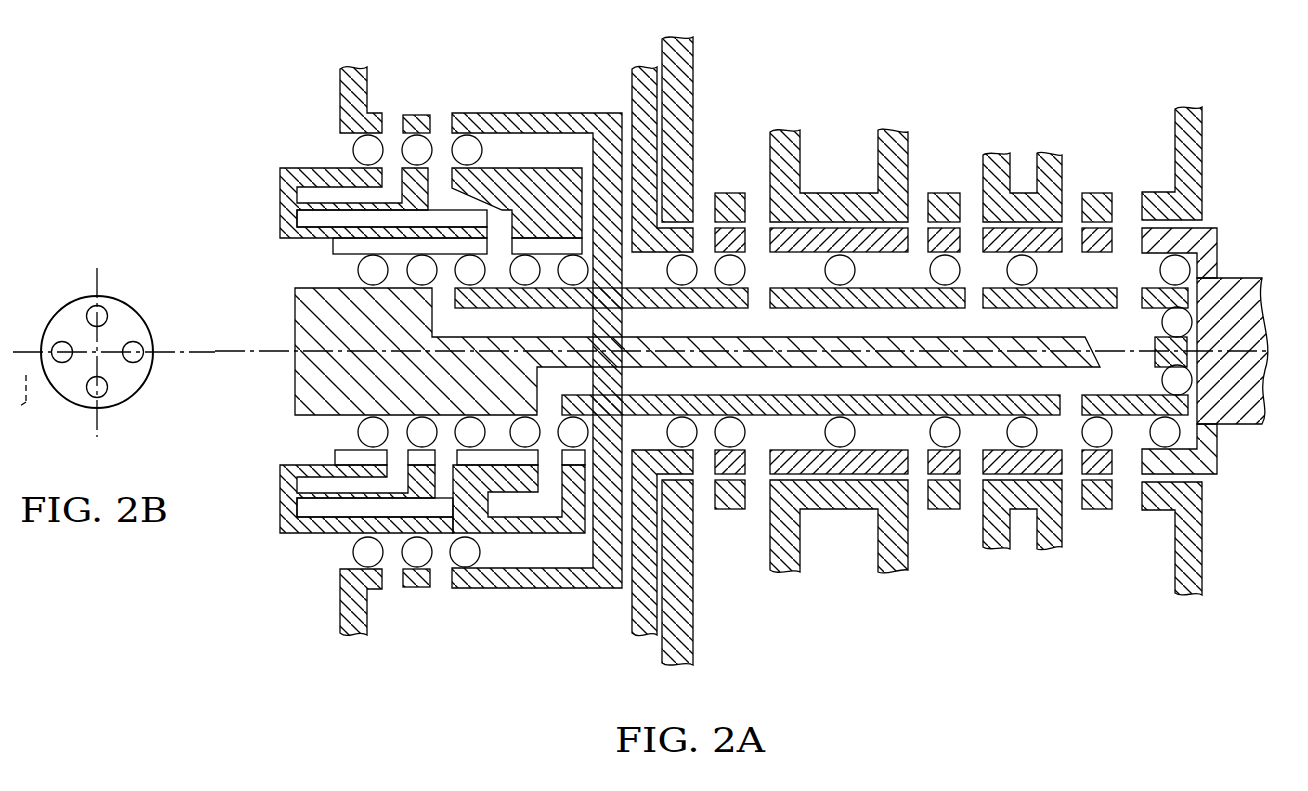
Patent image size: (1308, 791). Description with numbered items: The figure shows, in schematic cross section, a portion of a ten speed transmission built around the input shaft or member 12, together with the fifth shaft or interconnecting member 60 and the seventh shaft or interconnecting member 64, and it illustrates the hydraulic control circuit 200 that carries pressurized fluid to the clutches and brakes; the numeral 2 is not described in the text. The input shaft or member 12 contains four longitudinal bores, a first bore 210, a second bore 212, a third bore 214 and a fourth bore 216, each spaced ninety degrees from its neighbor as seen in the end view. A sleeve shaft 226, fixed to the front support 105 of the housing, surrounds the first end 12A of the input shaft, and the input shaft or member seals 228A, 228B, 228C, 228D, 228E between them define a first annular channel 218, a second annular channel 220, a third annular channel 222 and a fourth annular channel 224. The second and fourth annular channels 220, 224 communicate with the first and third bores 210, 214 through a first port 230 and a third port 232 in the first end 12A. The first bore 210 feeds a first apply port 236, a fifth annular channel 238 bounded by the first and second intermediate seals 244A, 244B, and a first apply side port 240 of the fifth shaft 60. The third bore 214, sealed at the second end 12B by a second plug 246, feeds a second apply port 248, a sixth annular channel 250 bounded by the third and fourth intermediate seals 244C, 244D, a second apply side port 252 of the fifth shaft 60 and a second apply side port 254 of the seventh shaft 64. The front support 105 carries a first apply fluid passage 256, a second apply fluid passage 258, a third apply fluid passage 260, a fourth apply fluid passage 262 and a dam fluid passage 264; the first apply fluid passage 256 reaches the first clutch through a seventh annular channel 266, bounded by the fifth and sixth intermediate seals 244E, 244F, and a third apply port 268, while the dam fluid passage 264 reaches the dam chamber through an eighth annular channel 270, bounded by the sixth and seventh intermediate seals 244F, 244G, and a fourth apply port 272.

In FIG. 2A, the connector 2 is at (1170, 322).
In FIG. 2B, the input shaft or member 12 is at (147, 320).
In FIG. 2A, the input shaft or member 12 is at (338, 98).
In FIG. 2A, the first end of the input shaft or member 12A is at (345, 418).
In FIG. 2A, the second end of the input shaft or member 12B is at (1203, 290).
In FIG. 2A, the fifth shaft or interconnecting member 60 is at (1250, 425).
In FIG. 2A, the seventh shaft or interconnecting member 64 is at (1202, 147).
In FIG. 2A, the front support 105 is at (356, 167).
In FIG. 2A, the hydraulic control circuit 200 is at (917, 96).
In FIG. 2B, the first bore 210 is at (95, 315).
In FIG. 2A, the first bore 210 is at (620, 308).
In FIG. 2B, the second bore 212 is at (133, 355).
In FIG. 2B, the third bore 214 is at (95, 390).
In FIG. 2A, the third bore 214 is at (880, 368).
In FIG. 2B, the fourth bore 216 is at (60, 348).
In FIG. 2A, the first annular channel 218 is at (397, 418).
In FIG. 2A, the second annular channel 220 is at (445, 418).
In FIG. 2A, the third annular channel 222 is at (498, 418).
In FIG. 2A, the fourth annular channel 224 is at (548, 248).
In FIG. 2A, the sleeve shaft 226 is at (333, 240).
In FIG. 2A, the first input shaft or member seal 228A is at (357, 270).
In FIG. 2A, the second input shaft or member seal 228B is at (418, 272).
In FIG. 2A, the third input shaft or member seal 228C is at (465, 273).
In FIG. 2A, the fourth input shaft or member seal 228D is at (525, 268).
In FIG. 2A, the fifth input shaft or member seal 228E is at (573, 268).
In FIG. 2A, the first port 230 is at (432, 290).
In FIG. 2A, the third port 232 is at (535, 407).
In FIG. 2A, the first apply port 236 is at (770, 297).
In FIG. 2A, the fifth annular channel 238 is at (713, 267).
In FIG. 2A, the first apply side port of the fifth shaft or interconnecting member 240 is at (733, 268).
In FIG. 2A, the first intermediate seal 244A is at (682, 268).
In FIG. 2A, the second intermediate seal 244B is at (750, 268).
In FIG. 2A, the third intermediate seal 244C is at (1022, 435).
In FIG. 2A, the fourth intermediate seal 244D is at (1103, 435).
In FIG. 2A, the fifth intermediate seal 244E is at (353, 152).
In FIG. 2A, the sixth intermediate seal 244F is at (407, 157).
In FIG. 2A, the seventh intermediate seal 244G is at (489, 109).
In FIG. 2A, the second plug 246 is at (1182, 385).
In FIG. 2A, the second apply port 248 is at (1062, 400).
In FIG. 2A, the sixth annular channel 250 is at (990, 440).
In FIG. 2A, the second apply side port of the fifth shaft or interconnecting member 252 is at (1063, 465).
In FIG. 2A, the second apply side port of the seventh shaft or interconnecting member 254 is at (1077, 510).
In FIG. 2A, the first apply fluid passage 256 is at (327, 190).
In FIG. 2A, the second apply fluid passage 258 is at (312, 485).
In FIG. 2A, the third apply fluid passage 260 is at (343, 500).
In FIG. 2A, the fourth apply fluid passage 262 is at (507, 467).
In FIG. 2A, the dam fluid passage 264 is at (430, 213).
In FIG. 2A, the seventh annular channel 266 is at (413, 157).
In FIG. 2A, the third apply port 268 is at (385, 113).
In FIG. 2A, the eighth annular channel 270 is at (466, 140).
In FIG. 2A, the fourth apply port 272 is at (445, 133).